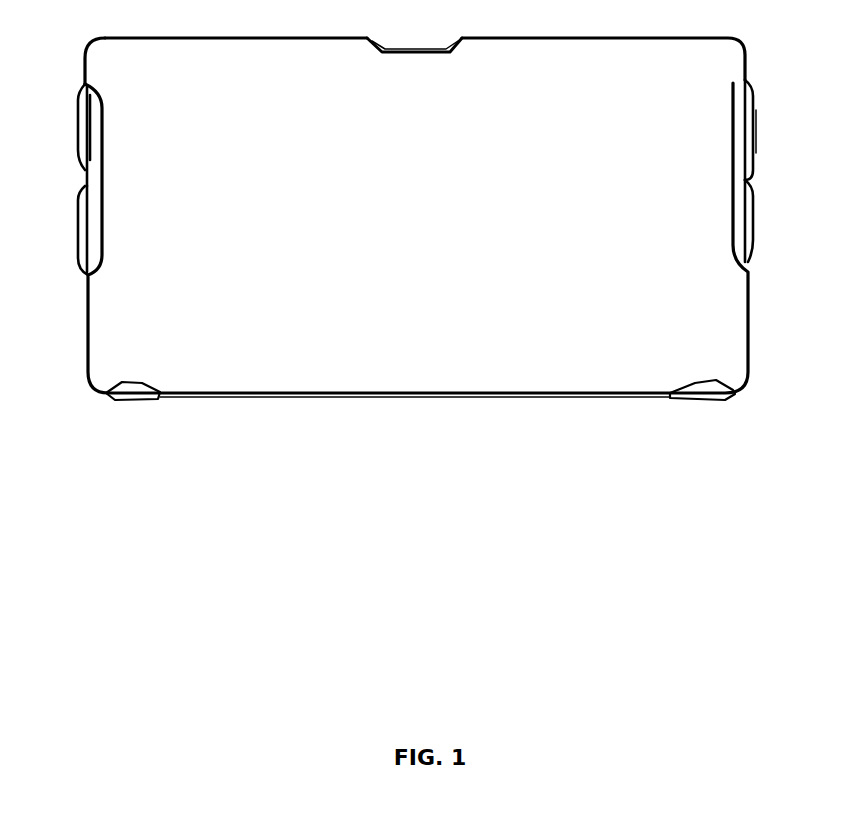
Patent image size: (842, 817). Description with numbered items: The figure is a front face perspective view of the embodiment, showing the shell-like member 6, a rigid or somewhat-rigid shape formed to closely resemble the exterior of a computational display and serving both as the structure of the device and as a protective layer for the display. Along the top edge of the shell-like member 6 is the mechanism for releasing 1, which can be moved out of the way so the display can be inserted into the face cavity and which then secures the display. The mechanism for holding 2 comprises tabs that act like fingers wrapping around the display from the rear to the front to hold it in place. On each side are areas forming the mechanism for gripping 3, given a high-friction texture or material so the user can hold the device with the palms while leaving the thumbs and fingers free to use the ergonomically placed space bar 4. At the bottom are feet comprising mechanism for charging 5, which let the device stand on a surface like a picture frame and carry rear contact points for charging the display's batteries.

The mechanism for releasing 1 is at (457, 41).
The mechanism for holding 2 is at (100, 130).
The mechanism for gripping 3 is at (750, 238).
The space bar 4 is at (750, 83).
The feet comprising mechanism for charging 5 is at (670, 396).
The shell-like member 6 is at (232, 29).